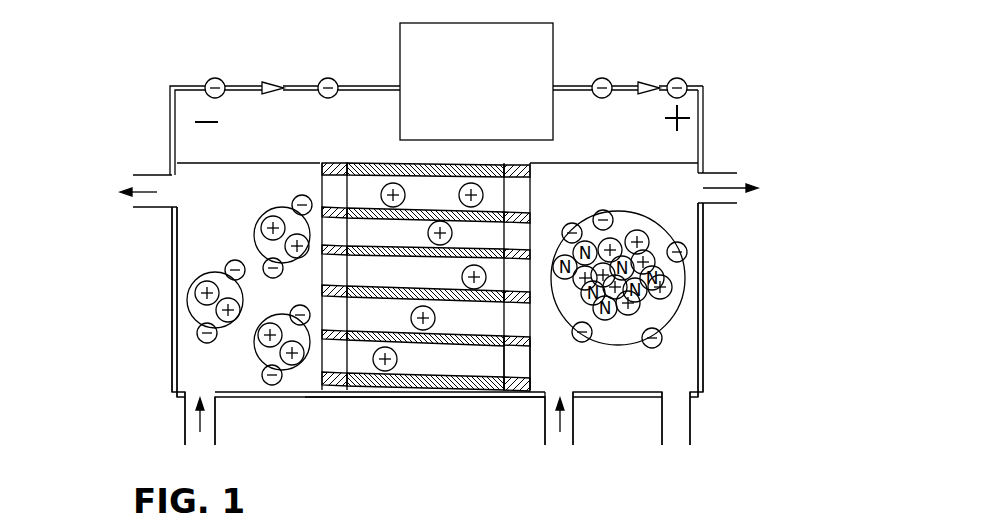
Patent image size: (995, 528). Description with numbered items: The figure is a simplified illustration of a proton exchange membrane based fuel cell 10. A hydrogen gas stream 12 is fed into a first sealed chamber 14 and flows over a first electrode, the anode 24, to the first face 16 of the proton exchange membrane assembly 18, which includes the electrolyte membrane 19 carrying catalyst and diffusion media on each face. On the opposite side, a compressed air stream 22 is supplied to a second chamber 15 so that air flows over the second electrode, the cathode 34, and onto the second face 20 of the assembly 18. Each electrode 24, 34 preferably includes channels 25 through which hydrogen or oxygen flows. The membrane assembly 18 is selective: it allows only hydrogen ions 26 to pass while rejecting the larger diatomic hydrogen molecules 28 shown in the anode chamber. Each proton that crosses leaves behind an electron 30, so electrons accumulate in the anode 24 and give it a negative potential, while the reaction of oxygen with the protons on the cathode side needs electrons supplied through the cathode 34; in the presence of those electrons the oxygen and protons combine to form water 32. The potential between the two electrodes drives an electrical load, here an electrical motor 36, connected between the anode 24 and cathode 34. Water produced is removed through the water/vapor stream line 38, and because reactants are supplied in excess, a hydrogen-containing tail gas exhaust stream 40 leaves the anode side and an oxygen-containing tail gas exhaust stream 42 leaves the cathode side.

The proton exchange membrane based fuel cell 10 is at (740, 287).
The hydrogen gas stream 12 is at (188, 422).
The first sealed chamber 14 is at (176, 232).
The second chamber 15 is at (690, 350).
The first face 16 is at (318, 383).
The proton exchange membrane assembly 18 is at (435, 309).
The electrolyte membrane 19 is at (452, 390).
The second face 20 is at (518, 232).
The compressed air stream 22 is at (575, 423).
The first electrode (anode) 24 is at (320, 187).
The channels 25 is at (528, 176).
The hydrogen ions 26 is at (382, 373).
The diatomic hydrogen molecules 28 is at (187, 308).
The electrons 30 is at (220, 79).
The water 32 is at (683, 303).
The second electrode (cathode) 34 is at (540, 335).
The electrical motor 36 is at (548, 42).
The water/vapor stream line 38 is at (693, 420).
The tail gas exhaust stream (anode side) 40 is at (147, 173).
The tail gas exhaust stream (cathode side) 42 is at (728, 172).